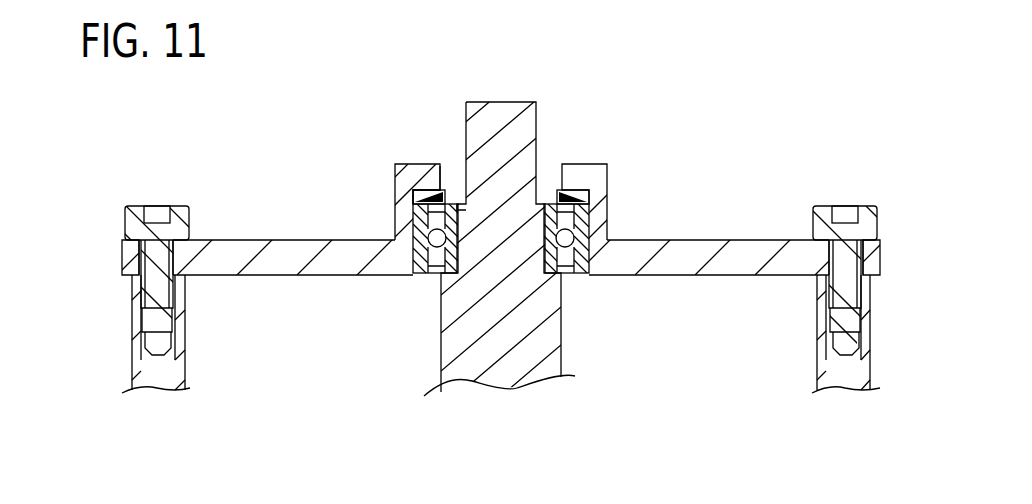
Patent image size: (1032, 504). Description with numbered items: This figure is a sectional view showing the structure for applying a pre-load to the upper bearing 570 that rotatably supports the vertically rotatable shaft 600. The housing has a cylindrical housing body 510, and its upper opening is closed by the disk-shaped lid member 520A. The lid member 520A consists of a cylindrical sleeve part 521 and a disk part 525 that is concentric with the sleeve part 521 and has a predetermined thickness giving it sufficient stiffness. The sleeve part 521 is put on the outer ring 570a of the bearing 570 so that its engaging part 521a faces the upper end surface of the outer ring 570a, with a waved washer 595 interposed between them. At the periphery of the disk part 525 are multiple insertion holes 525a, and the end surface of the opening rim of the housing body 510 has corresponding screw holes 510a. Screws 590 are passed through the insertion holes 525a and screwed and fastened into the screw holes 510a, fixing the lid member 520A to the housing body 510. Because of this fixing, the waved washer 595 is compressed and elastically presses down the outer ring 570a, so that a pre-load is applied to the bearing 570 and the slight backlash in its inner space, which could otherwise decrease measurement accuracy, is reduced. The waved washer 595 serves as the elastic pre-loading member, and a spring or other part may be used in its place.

The housing body 510 is at (473, 348).
The screw holes 510a is at (147, 345).
The lid member 520A is at (539, 240).
The sleeve part 521 is at (495, 211).
The engaging part 521a is at (415, 196).
The disk part 525 is at (539, 249).
The insertion holes 525a is at (150, 246).
The bearing 570 is at (393, 228).
The outer ring 570a is at (588, 250).
The screw 590 is at (140, 207).
The waved washer 595 is at (433, 193).
The shaft 600 is at (441, 308).